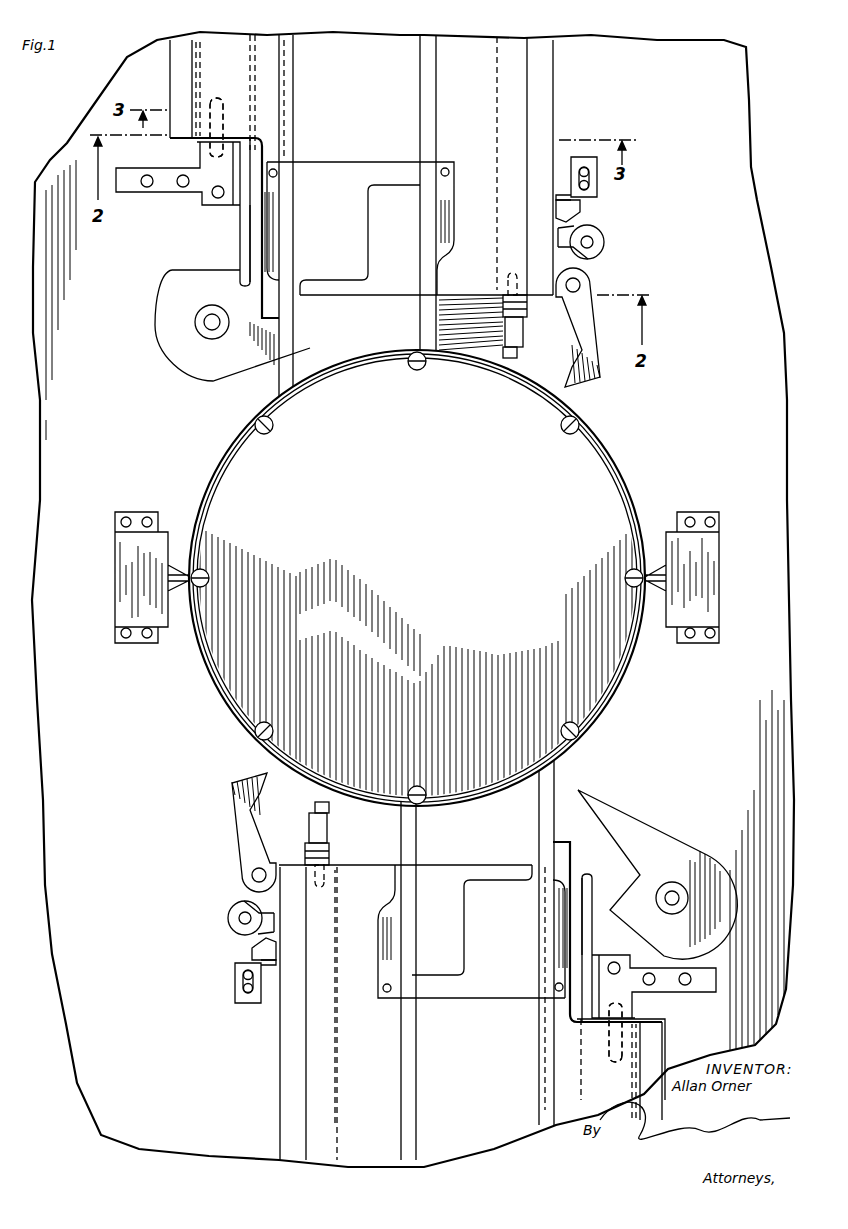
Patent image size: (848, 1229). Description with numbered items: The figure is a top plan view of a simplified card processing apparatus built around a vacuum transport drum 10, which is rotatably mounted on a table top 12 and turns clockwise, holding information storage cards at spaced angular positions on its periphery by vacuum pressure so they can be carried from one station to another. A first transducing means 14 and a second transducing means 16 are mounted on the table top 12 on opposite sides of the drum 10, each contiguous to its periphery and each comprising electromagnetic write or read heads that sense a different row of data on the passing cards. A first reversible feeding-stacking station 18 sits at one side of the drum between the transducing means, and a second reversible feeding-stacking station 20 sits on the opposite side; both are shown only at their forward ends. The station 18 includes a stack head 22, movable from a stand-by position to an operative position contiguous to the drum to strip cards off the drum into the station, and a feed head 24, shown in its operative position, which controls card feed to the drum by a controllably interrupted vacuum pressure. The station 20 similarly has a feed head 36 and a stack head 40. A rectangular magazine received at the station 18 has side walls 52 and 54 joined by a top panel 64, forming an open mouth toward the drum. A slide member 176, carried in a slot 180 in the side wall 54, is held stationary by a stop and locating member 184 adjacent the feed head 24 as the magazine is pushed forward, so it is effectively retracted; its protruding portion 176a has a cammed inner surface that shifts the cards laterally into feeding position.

The vacuum transport drum 10 is at (421, 556).
The table top 12 is at (60, 172).
The first transducing means 14 is at (708, 608).
The second transducing means 16 is at (123, 605).
The first reversible feeding-stacking station 18 is at (462, 73).
The second reversible feeding-stacking station 20 is at (378, 1110).
The stack head 22 is at (591, 293).
The feed head 24 is at (173, 288).
The feed head 36 is at (700, 862).
The stack head 40 is at (262, 832).
The side wall 52 is at (556, 212).
The side wall 54 is at (172, 85).
The top panel 64 is at (405, 140).
The slide member 176 is at (244, 157).
The protruding portion 176a is at (247, 241).
The slot 180 is at (258, 97).
The stop and locating member 184 is at (612, 1006).